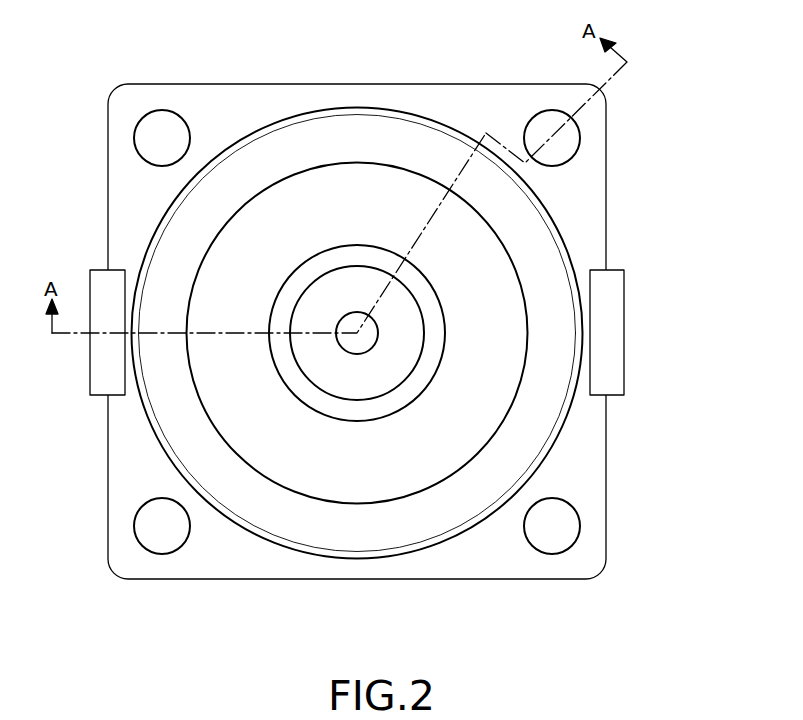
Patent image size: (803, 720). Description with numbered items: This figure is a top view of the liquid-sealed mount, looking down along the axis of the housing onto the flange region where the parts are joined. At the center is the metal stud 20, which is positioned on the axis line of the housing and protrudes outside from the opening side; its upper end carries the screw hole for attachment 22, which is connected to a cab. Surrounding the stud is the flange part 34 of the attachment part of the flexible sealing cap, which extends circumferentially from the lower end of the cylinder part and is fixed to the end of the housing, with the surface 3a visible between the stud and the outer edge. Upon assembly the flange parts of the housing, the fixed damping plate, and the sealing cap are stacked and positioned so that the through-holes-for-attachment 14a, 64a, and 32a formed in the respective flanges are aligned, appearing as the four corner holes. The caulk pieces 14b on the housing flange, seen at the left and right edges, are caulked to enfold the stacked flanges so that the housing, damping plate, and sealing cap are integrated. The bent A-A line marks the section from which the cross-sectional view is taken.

The outer ring face of housing 3a is at (393, 379).
The through-holes-for-attachment 14a is at (452, 335).
The caulk pieces 14b is at (100, 375).
The stud 20 is at (406, 308).
The screw hole for attachment 22 is at (364, 352).
The through-holes-for-attachment 32a is at (163, 125).
The flange part 34 is at (436, 561).
The through-holes-for-attachment 64a is at (452, 335).